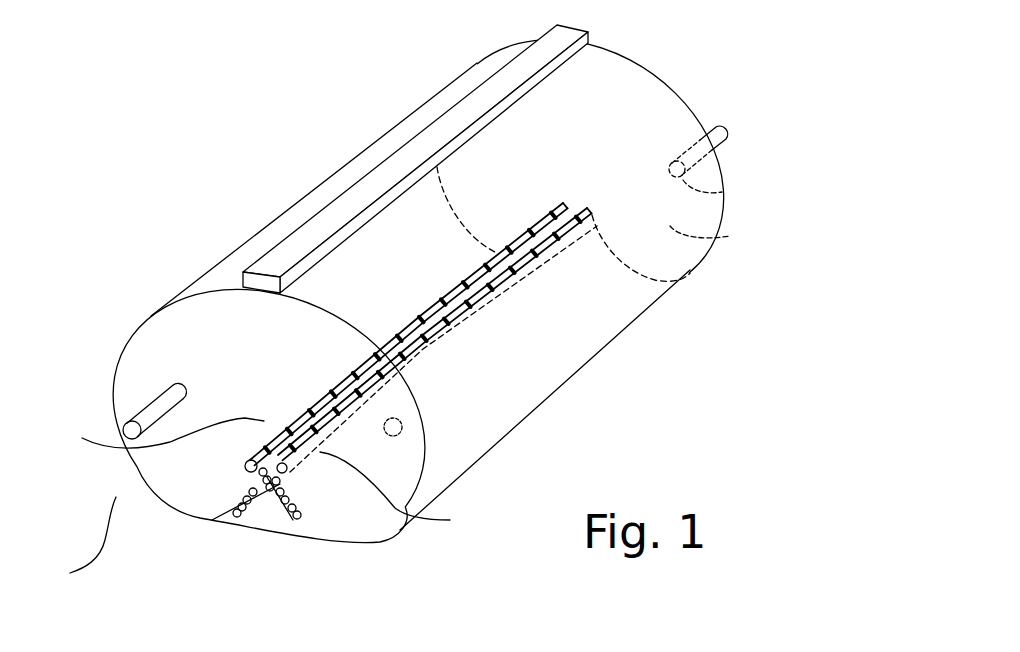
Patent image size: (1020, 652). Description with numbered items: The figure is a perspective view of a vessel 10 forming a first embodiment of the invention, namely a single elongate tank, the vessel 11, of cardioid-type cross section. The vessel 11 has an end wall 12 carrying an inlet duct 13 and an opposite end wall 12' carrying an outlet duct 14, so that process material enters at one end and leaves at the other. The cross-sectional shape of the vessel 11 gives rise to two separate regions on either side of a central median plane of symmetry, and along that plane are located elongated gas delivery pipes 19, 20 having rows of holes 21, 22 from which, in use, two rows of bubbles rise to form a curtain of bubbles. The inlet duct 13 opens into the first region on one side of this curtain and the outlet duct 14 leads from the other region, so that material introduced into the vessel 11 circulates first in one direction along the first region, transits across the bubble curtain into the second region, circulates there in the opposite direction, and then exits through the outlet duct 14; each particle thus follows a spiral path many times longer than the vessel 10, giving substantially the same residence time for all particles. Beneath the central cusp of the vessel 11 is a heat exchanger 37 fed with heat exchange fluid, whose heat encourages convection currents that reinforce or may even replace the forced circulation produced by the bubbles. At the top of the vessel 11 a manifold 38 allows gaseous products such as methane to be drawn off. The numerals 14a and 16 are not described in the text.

The vessel 10 is at (74, 545).
The vessel 11 is at (508, 378).
The end wall 12 is at (269, 445).
The opposite end wall 12' is at (599, 227).
The inlet duct 13 is at (162, 406).
The outlet duct 14 is at (722, 192).
The pin bore 14a is at (396, 436).
The wedge insert 16 is at (268, 520).
The gas delivery pipe 19 is at (159, 428).
The gas delivery pipe 20 is at (401, 493).
The row of holes 21 is at (357, 383).
The row of holes 22 is at (500, 300).
The heat exchanger 37 is at (218, 521).
The manifold 38 is at (378, 154).